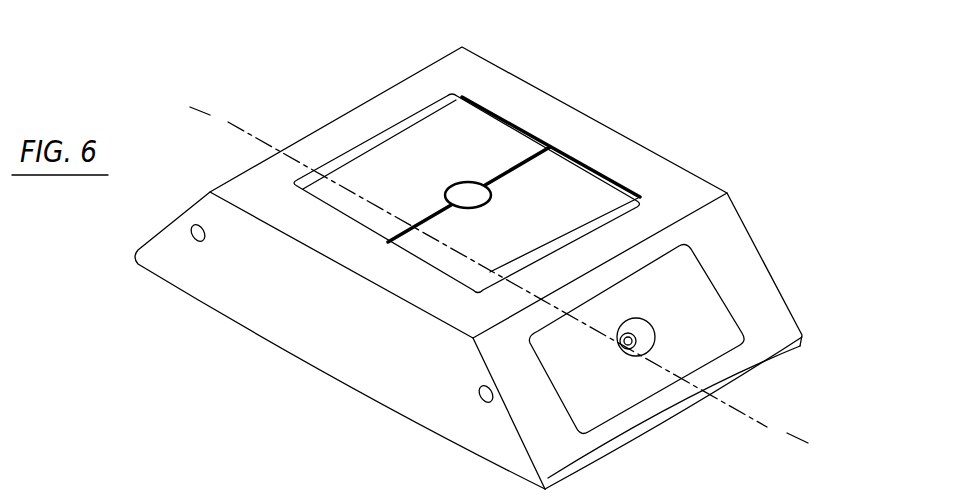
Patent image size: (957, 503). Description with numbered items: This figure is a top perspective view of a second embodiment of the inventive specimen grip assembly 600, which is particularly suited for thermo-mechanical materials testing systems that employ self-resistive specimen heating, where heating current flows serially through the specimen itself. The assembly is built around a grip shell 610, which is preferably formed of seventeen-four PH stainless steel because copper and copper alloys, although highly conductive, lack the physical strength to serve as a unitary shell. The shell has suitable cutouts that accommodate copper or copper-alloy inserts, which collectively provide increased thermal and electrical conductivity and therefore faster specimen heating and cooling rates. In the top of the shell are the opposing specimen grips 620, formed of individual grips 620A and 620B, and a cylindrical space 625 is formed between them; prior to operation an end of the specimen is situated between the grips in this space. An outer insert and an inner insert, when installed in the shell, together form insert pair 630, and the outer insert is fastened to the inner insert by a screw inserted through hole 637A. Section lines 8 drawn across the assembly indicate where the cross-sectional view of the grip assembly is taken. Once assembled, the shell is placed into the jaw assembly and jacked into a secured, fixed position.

The section lines 8- 8 is at (190, 107).
The specimen grip assembly 600 is at (240, 405).
The grip shell 610 is at (215, 292).
The specimen grips 620 is at (497, 142).
The individual grip 620A is at (532, 222).
The individual grip 620B is at (425, 167).
The cylindrical space 625 is at (469, 188).
The insert pair 630 is at (627, 203).
The hole 637A is at (698, 337).